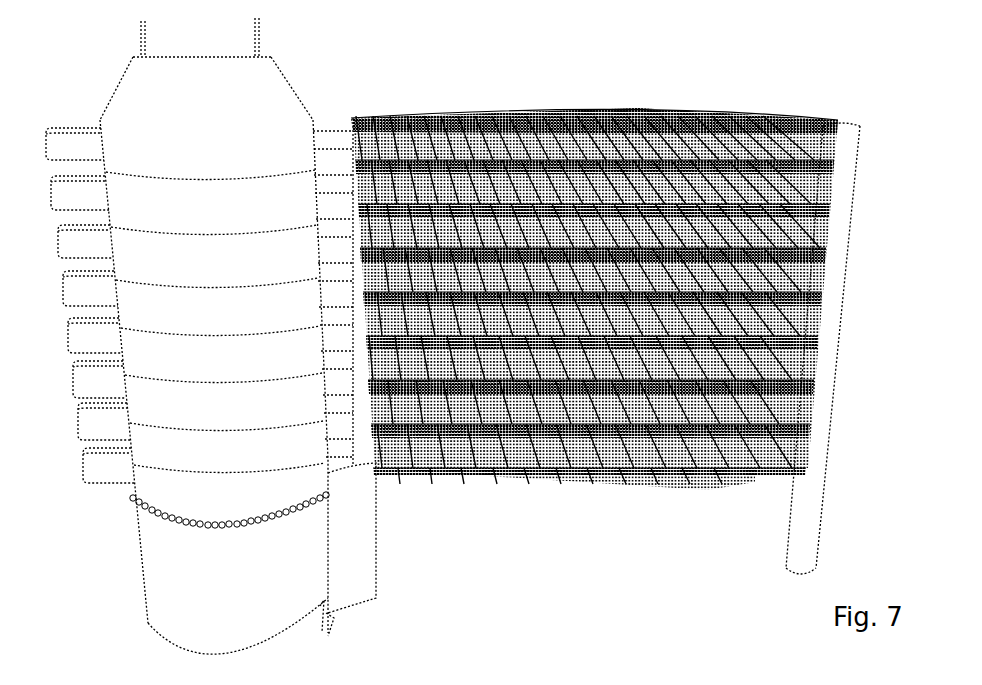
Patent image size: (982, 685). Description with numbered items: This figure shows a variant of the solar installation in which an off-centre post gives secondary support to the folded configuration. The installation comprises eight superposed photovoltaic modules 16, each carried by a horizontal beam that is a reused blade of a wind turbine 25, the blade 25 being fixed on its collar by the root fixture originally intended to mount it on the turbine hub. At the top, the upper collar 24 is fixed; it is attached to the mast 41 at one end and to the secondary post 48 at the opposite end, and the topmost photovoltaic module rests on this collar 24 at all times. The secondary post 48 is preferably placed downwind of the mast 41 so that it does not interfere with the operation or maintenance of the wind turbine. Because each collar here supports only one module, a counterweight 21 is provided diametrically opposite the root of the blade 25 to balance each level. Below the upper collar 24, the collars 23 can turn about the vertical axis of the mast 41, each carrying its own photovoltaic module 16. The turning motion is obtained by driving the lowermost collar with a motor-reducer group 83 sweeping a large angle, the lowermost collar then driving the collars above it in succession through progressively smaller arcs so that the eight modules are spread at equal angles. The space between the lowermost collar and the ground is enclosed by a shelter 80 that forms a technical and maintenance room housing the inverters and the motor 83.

The photovoltaic module 16 is at (757, 447).
The counterweight 21 is at (70, 452).
The turning collar 23 is at (253, 348).
The upper collar 24 is at (128, 145).
The reused blade of a wind turbine 25 is at (377, 192).
The mast 41 is at (133, 15).
The secondary post 48 is at (837, 218).
The shelter 80 is at (160, 603).
The motor-reducer group 83 is at (353, 573).